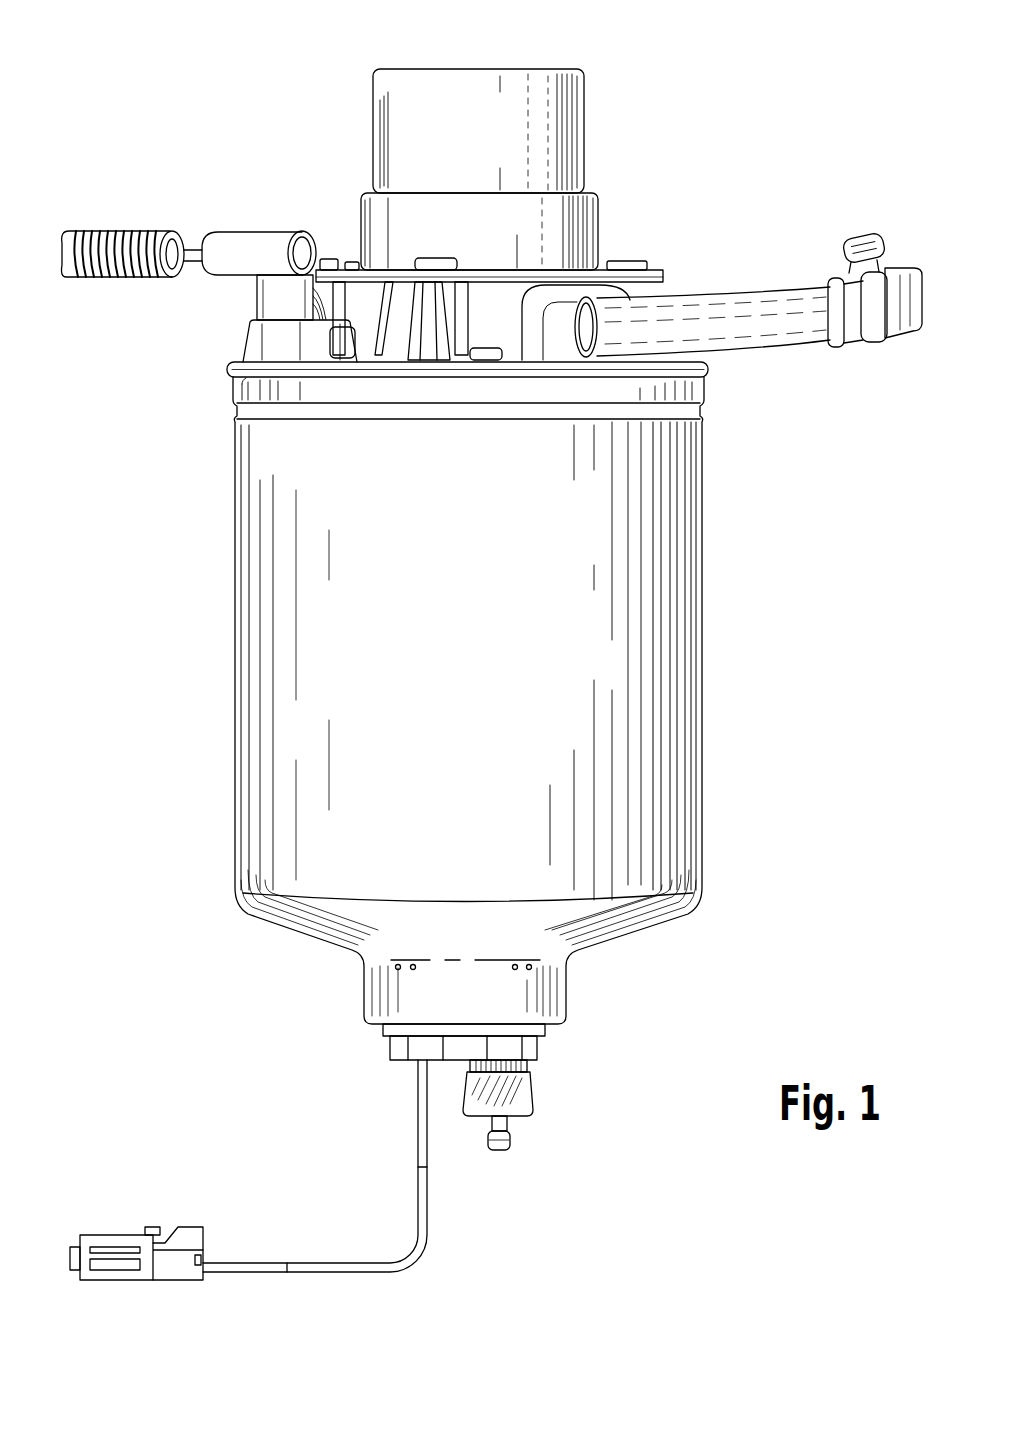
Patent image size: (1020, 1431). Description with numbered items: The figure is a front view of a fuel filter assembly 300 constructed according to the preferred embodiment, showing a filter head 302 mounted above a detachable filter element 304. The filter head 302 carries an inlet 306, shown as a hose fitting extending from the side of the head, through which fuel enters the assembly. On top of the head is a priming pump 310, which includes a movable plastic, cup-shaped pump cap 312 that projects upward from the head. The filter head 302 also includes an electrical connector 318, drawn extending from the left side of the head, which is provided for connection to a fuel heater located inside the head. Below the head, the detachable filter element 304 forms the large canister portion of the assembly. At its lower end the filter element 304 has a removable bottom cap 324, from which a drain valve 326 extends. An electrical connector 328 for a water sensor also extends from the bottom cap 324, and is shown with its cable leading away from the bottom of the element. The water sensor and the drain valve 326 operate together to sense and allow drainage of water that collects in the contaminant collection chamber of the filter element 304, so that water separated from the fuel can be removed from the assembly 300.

The fuel filter assembly 300 is at (850, 85).
The filter head 302 is at (655, 262).
The filter element 304 is at (702, 703).
The inlet 306 is at (767, 330).
The priming pump 310 is at (650, 122).
The pump cap 312 is at (372, 140).
The electrical connector 318 is at (105, 231).
The bottom cap 324 is at (530, 1047).
The drain valve 326 is at (523, 1097).
The electrical connector 328 is at (193, 1233).